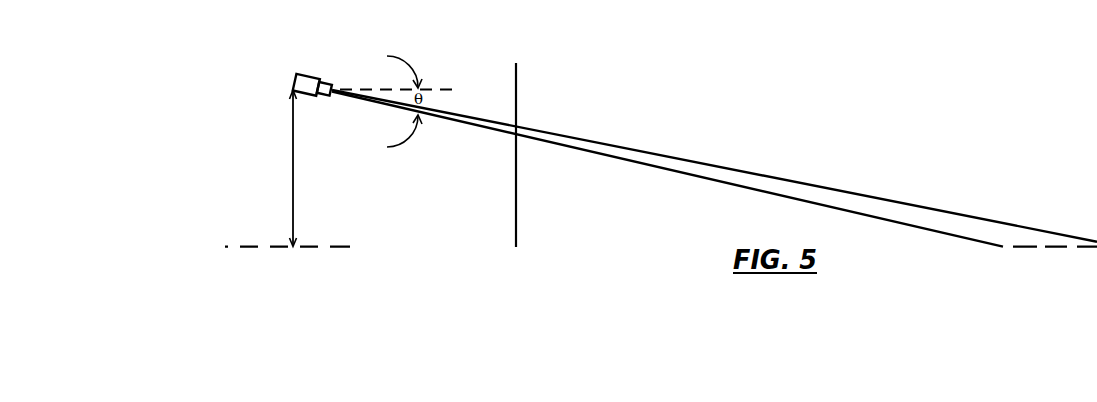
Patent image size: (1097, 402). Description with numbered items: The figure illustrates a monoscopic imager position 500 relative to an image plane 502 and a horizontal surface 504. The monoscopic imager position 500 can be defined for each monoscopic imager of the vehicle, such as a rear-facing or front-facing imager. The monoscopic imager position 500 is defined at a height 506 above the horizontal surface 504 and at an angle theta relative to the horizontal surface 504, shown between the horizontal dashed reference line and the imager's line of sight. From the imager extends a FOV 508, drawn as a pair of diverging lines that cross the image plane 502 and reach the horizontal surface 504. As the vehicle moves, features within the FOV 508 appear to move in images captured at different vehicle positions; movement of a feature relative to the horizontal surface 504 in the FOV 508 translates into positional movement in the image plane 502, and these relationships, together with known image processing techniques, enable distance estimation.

The monoscopic imager position 500 is at (297, 73).
The image plane 502 is at (516, 247).
The horizontal surface 504 is at (1062, 248).
The height 506 is at (293, 180).
The FOV 508 is at (778, 180).